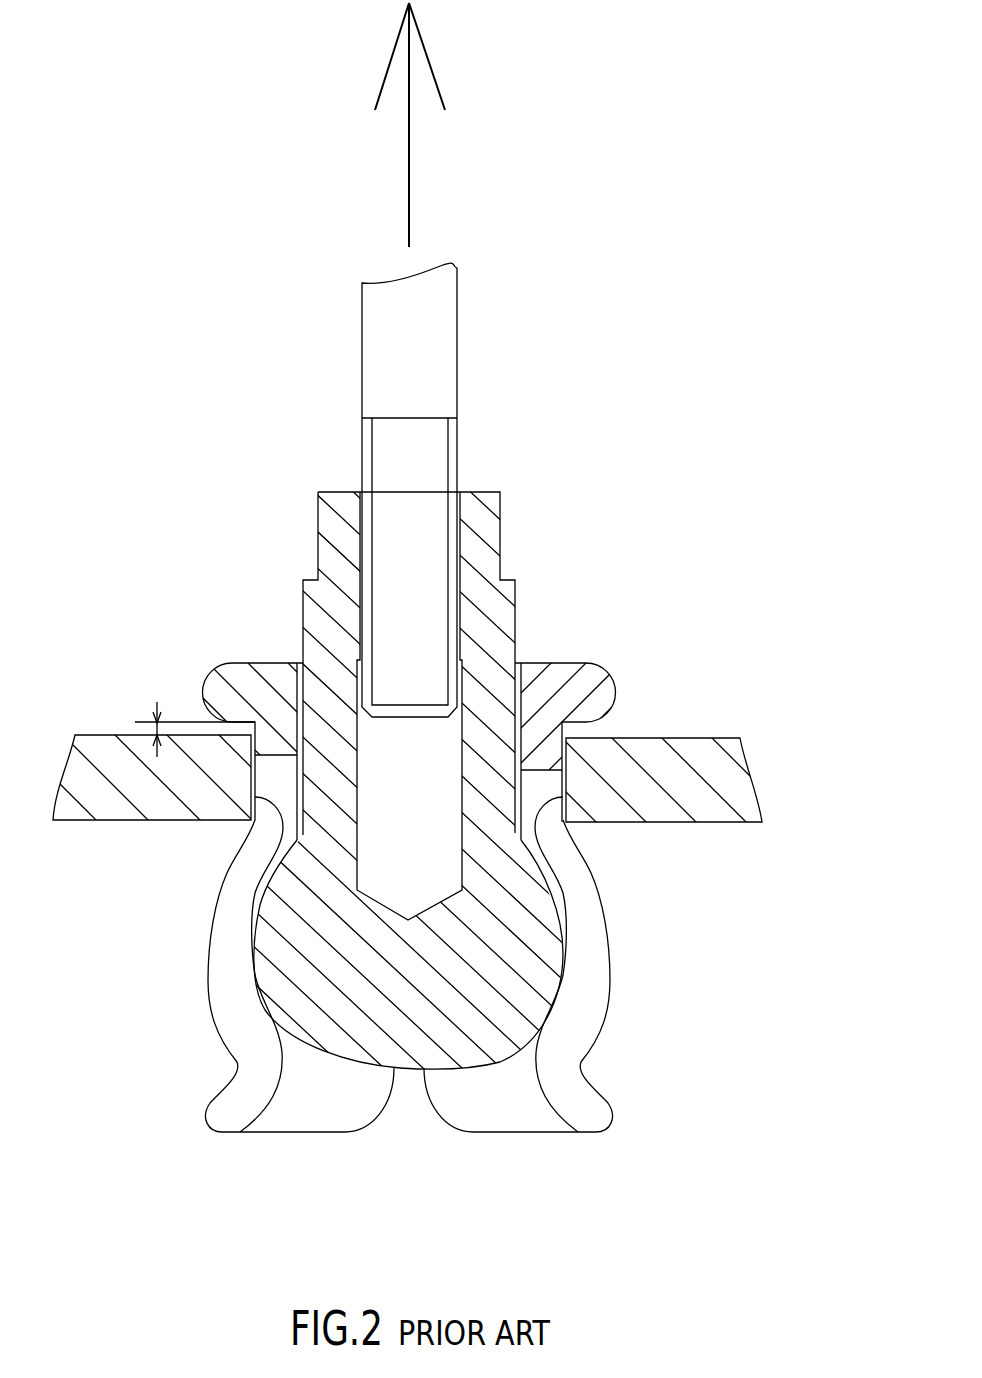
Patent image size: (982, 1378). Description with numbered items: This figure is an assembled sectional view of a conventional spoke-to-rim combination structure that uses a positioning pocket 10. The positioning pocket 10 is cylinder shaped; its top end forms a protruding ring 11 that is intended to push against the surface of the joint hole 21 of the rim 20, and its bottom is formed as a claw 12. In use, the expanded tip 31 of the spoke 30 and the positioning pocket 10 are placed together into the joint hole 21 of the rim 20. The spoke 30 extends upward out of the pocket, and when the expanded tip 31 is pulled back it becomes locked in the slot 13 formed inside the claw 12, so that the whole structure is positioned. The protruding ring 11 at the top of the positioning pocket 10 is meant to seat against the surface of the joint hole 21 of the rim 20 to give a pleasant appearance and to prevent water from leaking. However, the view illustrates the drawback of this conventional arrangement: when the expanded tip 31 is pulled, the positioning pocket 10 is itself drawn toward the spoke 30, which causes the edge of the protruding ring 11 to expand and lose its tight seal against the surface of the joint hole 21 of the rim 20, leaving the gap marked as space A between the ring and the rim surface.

The positioning pocket 10 is at (228, 658).
The protruding ring 11 is at (613, 705).
The claw 12 is at (607, 990).
The slot 13 is at (565, 950).
The rim 20 is at (697, 738).
The joint hole 21 is at (245, 888).
The spoke 30 is at (426, 374).
The expanded tip 31 is at (377, 985).
The space A is at (194, 725).